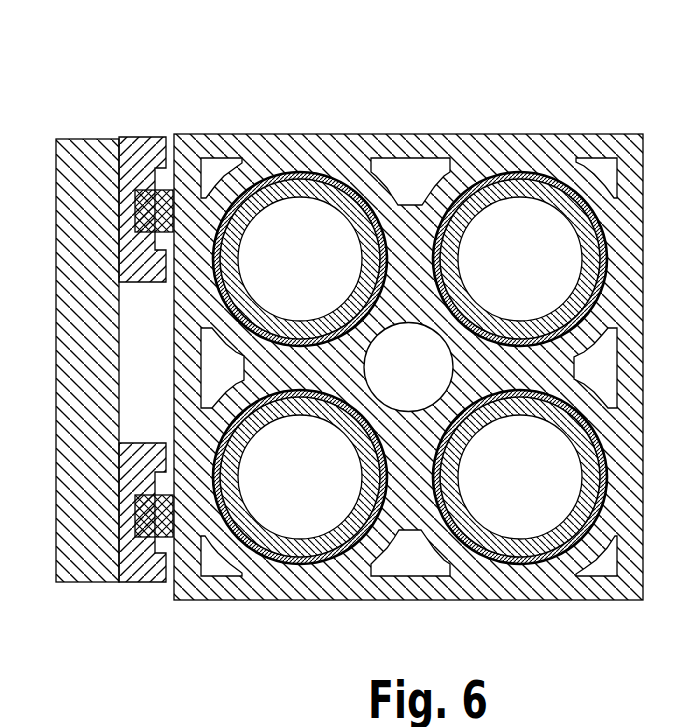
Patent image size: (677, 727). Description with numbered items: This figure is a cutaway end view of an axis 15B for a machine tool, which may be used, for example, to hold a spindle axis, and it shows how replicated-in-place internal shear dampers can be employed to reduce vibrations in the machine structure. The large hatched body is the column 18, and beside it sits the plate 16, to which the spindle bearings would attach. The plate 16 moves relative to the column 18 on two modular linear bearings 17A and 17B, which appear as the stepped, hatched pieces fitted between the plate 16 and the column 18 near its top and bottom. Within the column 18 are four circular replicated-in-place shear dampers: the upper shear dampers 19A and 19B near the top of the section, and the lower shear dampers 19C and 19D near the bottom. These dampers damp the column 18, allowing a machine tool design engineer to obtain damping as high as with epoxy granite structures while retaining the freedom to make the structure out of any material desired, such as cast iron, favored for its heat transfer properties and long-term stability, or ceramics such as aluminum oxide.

The axis 15B is at (240, 632).
The plate 16 is at (57, 542).
The modular linear bearing 17A is at (120, 162).
The modular linear bearing 17B is at (142, 548).
The column 18 is at (273, 137).
The upper shear damper 19A is at (333, 183).
The upper shear damper 19B is at (502, 175).
The lower shear damper 19C is at (327, 560).
The lower shear damper 19D is at (500, 560).